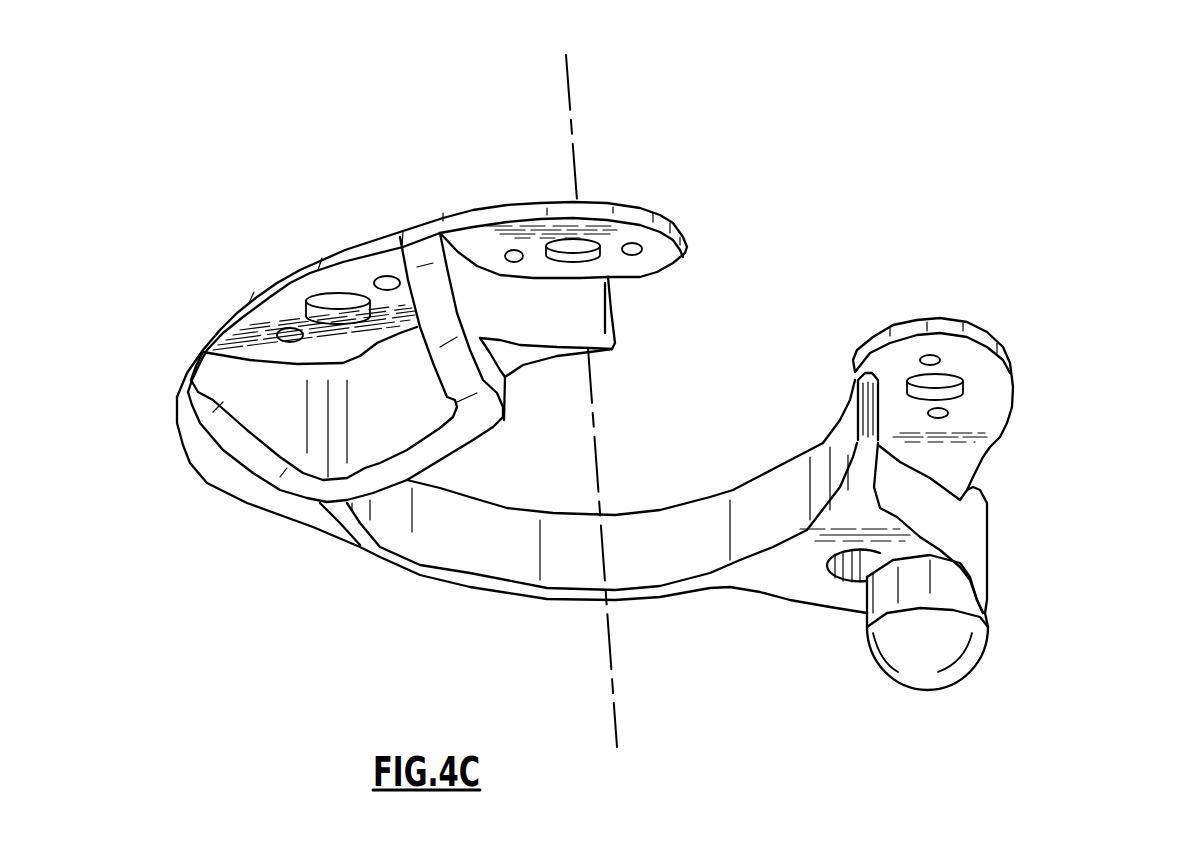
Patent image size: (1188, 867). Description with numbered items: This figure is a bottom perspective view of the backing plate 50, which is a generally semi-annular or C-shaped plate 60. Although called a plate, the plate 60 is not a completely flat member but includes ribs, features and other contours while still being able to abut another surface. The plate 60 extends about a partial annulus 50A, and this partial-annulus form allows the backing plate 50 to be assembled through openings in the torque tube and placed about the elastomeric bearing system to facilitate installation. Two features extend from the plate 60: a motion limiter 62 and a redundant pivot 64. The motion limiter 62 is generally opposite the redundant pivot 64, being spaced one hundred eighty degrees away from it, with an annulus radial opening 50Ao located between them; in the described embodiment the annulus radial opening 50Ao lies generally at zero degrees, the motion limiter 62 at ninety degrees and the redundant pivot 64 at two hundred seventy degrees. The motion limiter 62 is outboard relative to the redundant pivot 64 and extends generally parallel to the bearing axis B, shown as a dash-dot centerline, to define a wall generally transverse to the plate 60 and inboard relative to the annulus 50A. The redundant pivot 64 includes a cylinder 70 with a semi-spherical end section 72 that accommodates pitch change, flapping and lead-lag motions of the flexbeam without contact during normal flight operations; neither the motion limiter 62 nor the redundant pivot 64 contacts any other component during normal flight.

The backing plate 50 is at (679, 472).
The partial annulus 50A is at (660, 461).
The annulus radial opening 50Ao is at (806, 311).
The plate 60 is at (990, 447).
The motion limiter 62 is at (449, 449).
The redundant pivot 64 is at (983, 670).
The cylinder 70 is at (987, 625).
The semi-spherical end section 72 is at (930, 677).
The bearing axis B is at (613, 713).